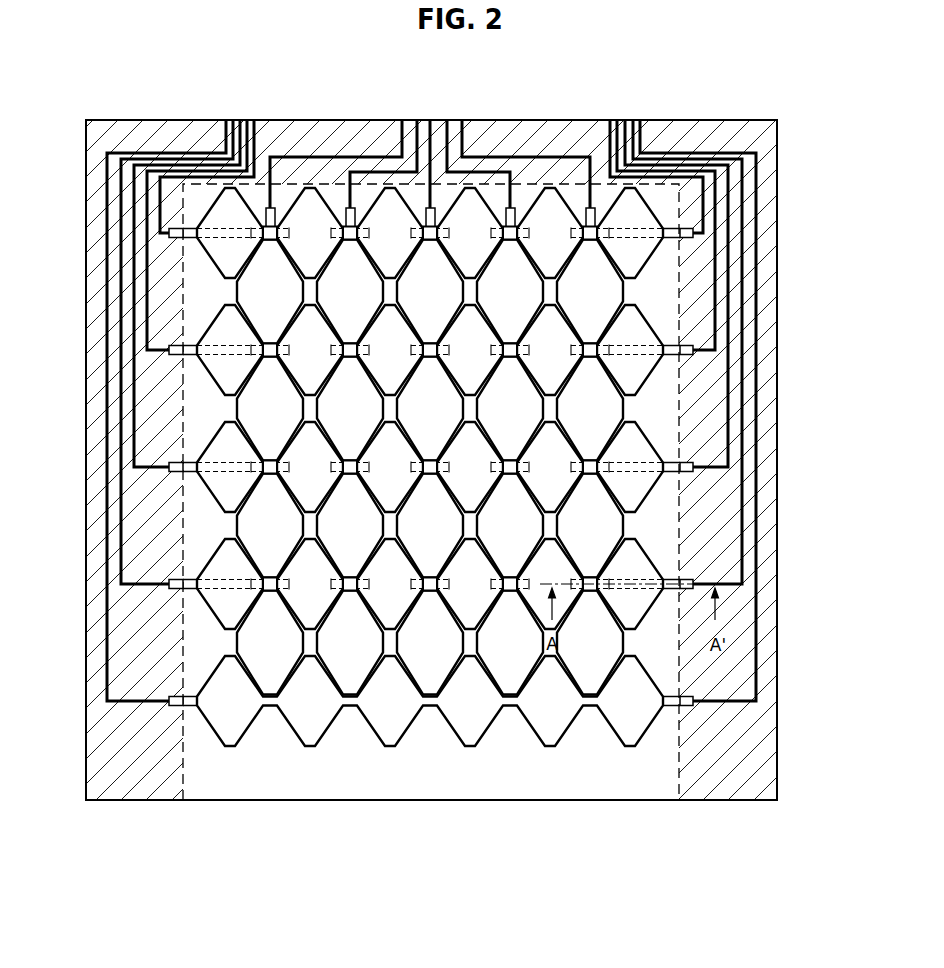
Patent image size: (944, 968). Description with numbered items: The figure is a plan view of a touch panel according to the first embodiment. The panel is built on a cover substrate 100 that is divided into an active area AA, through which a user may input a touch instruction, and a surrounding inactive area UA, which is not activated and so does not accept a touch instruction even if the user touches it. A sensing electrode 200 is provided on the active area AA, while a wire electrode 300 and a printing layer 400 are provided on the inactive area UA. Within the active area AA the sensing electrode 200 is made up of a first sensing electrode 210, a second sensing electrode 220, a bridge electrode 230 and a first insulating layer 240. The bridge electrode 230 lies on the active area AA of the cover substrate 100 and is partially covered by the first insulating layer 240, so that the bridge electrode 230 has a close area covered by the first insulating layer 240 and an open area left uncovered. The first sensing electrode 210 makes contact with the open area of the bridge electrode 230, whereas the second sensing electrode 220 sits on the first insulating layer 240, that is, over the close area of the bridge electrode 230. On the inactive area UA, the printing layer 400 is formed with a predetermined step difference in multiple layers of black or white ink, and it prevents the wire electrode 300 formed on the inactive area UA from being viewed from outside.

The cover substrate 100 is at (777, 741).
The sensing electrode 200 is at (538, 467).
The first sensing electrode 210 is at (645, 482).
The second sensing electrode 220 is at (603, 652).
The bridge electrode 230 is at (605, 463).
The first insulating layer 240 is at (592, 457).
The wire electrode 300 is at (528, 157).
The printing layer 400 is at (750, 770).
The inactive area UA is at (110, 743).
The active area AA is at (270, 758).